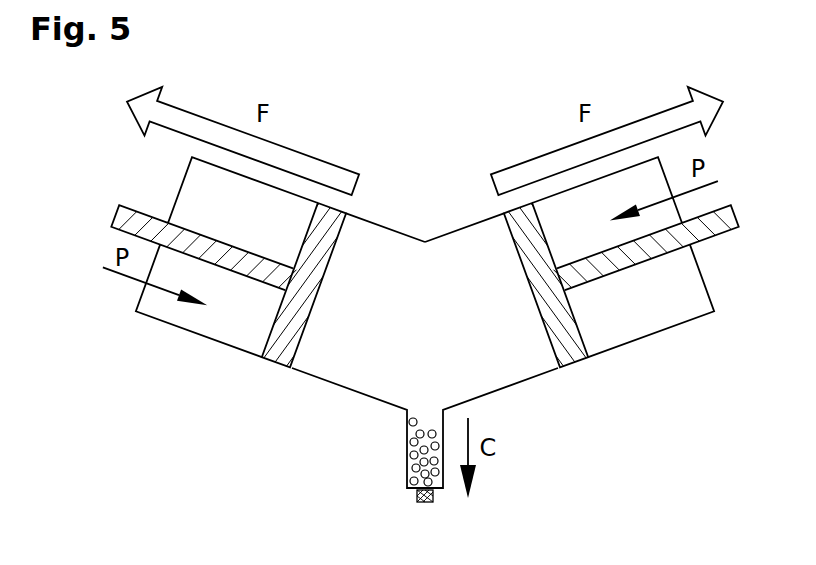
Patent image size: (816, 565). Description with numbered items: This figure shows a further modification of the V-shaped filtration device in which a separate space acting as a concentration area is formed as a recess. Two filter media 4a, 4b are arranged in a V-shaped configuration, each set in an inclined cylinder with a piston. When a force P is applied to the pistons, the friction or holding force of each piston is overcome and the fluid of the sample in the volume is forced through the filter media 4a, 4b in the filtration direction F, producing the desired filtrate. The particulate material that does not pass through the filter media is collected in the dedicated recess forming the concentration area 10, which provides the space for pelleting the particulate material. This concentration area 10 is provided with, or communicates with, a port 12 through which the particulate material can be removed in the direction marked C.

The filter medium 4a is at (348, 256).
The filter medium 4b is at (502, 256).
The concentration area 10 is at (392, 445).
The port 12 is at (416, 493).